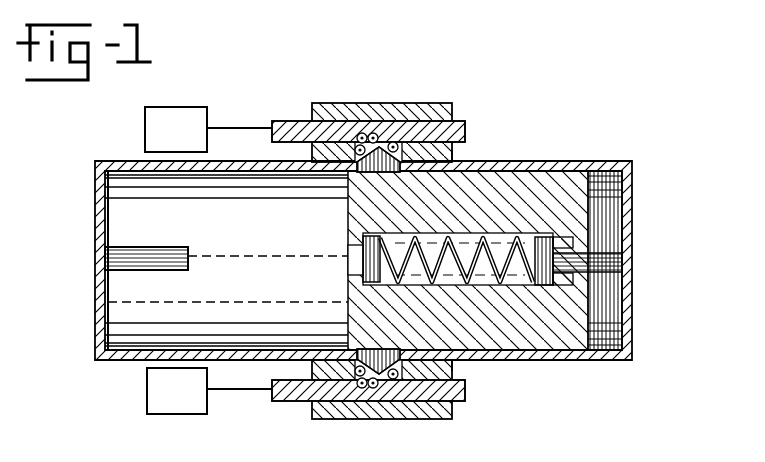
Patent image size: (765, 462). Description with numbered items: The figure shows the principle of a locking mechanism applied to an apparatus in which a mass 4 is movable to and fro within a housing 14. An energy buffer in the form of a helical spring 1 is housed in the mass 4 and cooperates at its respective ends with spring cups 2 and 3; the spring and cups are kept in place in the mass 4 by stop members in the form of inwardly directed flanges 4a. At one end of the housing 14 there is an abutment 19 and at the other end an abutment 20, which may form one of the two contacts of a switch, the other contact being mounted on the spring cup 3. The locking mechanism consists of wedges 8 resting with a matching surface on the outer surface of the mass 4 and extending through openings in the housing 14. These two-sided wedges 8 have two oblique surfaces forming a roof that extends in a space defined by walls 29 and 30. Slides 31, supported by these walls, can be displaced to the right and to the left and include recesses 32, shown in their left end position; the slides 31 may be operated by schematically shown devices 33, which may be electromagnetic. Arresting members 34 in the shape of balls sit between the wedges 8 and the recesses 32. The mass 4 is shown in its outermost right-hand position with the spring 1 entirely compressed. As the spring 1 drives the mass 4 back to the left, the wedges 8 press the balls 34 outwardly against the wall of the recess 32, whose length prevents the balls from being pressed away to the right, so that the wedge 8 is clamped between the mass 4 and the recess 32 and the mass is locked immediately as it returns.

The helical spring 1 is at (585, 318).
The spring cup 2 is at (370, 259).
The spring cup 3 is at (556, 281).
The mass 4 is at (530, 196).
The inwardly directed flanges 4a is at (583, 238).
The wedges 8 is at (422, 103).
The housing 14 is at (625, 222).
The abutment 19 is at (112, 258).
The abutment 20 is at (605, 263).
The wall 29 is at (327, 108).
The wall 30 is at (452, 150).
The slides 31 is at (283, 128).
The recesses 32 is at (375, 134).
The devices 33 is at (168, 122).
The arresting members 34 is at (357, 125).